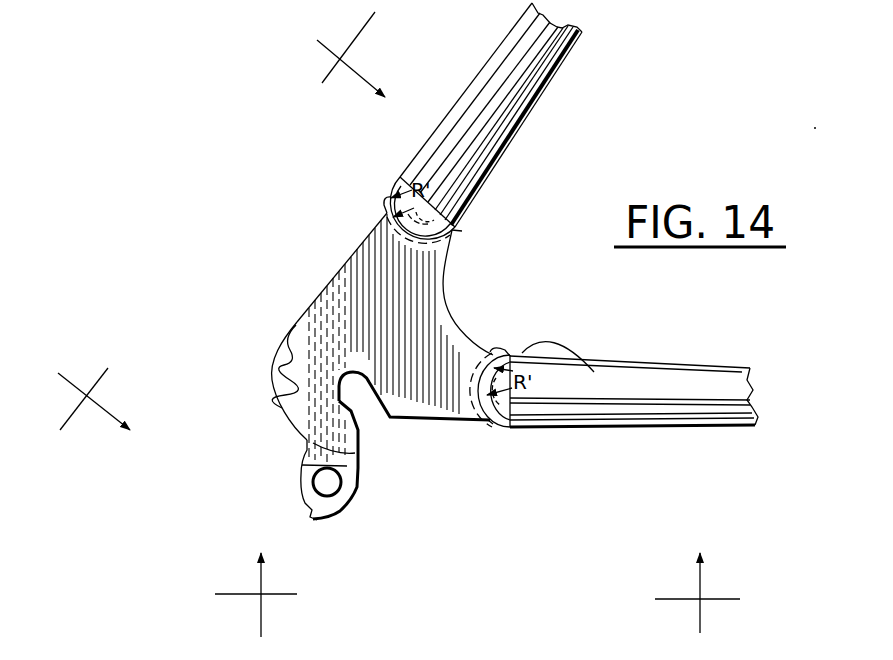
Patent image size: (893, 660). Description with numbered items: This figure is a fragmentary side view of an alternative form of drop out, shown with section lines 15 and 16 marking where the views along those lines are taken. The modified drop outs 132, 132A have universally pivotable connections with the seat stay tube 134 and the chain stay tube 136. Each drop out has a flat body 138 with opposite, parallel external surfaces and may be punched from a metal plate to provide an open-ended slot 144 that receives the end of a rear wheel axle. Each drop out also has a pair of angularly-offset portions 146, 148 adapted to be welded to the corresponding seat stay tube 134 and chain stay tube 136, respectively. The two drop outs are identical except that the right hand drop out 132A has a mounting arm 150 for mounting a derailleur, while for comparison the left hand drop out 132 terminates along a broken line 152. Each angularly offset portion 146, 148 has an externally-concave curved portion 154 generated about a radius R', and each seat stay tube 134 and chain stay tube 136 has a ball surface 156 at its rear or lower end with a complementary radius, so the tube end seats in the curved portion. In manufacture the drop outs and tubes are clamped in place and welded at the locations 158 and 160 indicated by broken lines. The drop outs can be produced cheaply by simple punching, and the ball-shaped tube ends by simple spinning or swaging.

The section line 15- 15 is at (214, 220).
The section line 16- 16 is at (477, 595).
The left hand drop out 132 is at (274, 377).
The right hand drop out 132A is at (305, 312).
The seat stay tube 134 is at (542, 92).
The chain stay tube 136 is at (658, 362).
The flat body 138 is at (370, 307).
The open-ended slot 144 is at (362, 403).
The angularly-offset portion 146 is at (427, 263).
The angularly-offset portion 148 is at (493, 353).
The mounting arm 150 is at (320, 458).
The broken line 152 is at (308, 444).
The externally-concave curved portion 154 is at (398, 192).
The ball surface 156 is at (403, 243).
The weld location 158 is at (460, 232).
The weld location 160 is at (493, 424).